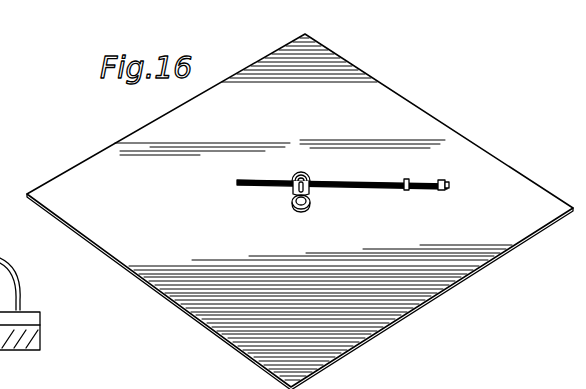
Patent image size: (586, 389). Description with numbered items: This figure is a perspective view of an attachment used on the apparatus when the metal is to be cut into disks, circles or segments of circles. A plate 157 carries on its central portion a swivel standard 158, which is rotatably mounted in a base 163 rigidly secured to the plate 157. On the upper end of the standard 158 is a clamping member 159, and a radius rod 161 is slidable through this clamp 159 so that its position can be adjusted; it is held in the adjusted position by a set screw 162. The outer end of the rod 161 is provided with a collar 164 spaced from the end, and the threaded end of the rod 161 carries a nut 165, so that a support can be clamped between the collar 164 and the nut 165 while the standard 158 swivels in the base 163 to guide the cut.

The plate 157 is at (413, 111).
The swivel standard 158 is at (291, 189).
The clamping member 159 is at (305, 172).
The radius rod 161 is at (385, 189).
The set screw 162 is at (310, 190).
The base 163 is at (298, 212).
The collar 164 is at (407, 179).
The nut 165 is at (446, 180).